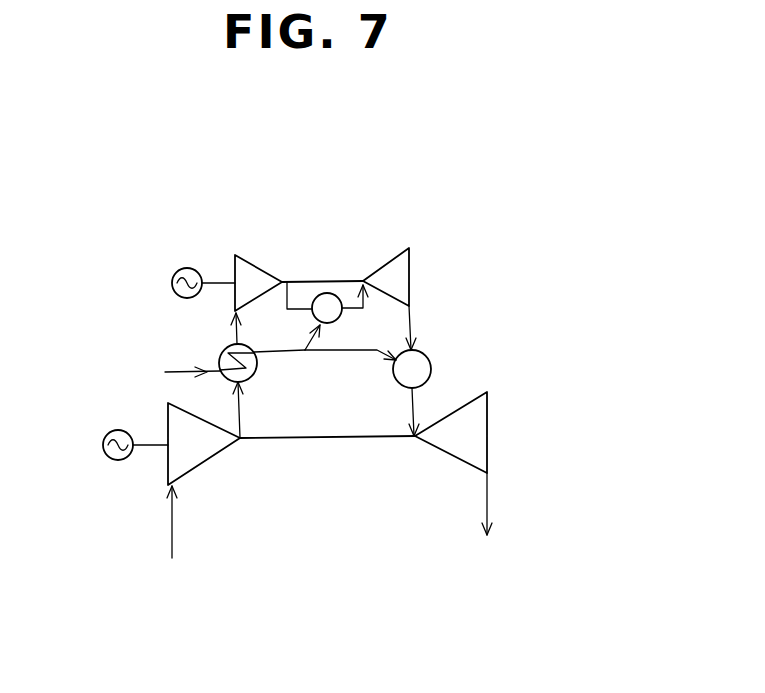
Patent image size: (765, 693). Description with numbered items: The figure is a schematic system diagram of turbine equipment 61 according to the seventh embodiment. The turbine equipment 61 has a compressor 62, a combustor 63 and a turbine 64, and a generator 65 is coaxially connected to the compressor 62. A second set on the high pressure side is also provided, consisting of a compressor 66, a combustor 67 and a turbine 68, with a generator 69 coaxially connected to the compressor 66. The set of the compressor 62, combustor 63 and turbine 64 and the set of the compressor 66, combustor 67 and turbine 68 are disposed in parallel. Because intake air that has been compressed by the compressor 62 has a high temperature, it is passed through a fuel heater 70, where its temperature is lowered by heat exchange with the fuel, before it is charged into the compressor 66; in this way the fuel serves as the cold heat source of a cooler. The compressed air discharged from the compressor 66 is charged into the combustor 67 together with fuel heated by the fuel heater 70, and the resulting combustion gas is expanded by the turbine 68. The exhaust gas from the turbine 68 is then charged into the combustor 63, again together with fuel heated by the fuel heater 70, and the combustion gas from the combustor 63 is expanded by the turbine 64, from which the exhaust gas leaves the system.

The turbine equipment 61 is at (353, 478).
The compressor 62 is at (217, 462).
The combustor 63 is at (432, 370).
The turbine 64 is at (487, 427).
The generator 65 is at (117, 429).
The compressor 66 is at (255, 263).
The combustor 67 is at (333, 292).
The turbine 68 is at (410, 266).
The generator 69 is at (177, 272).
The fuel heater 70 is at (223, 351).